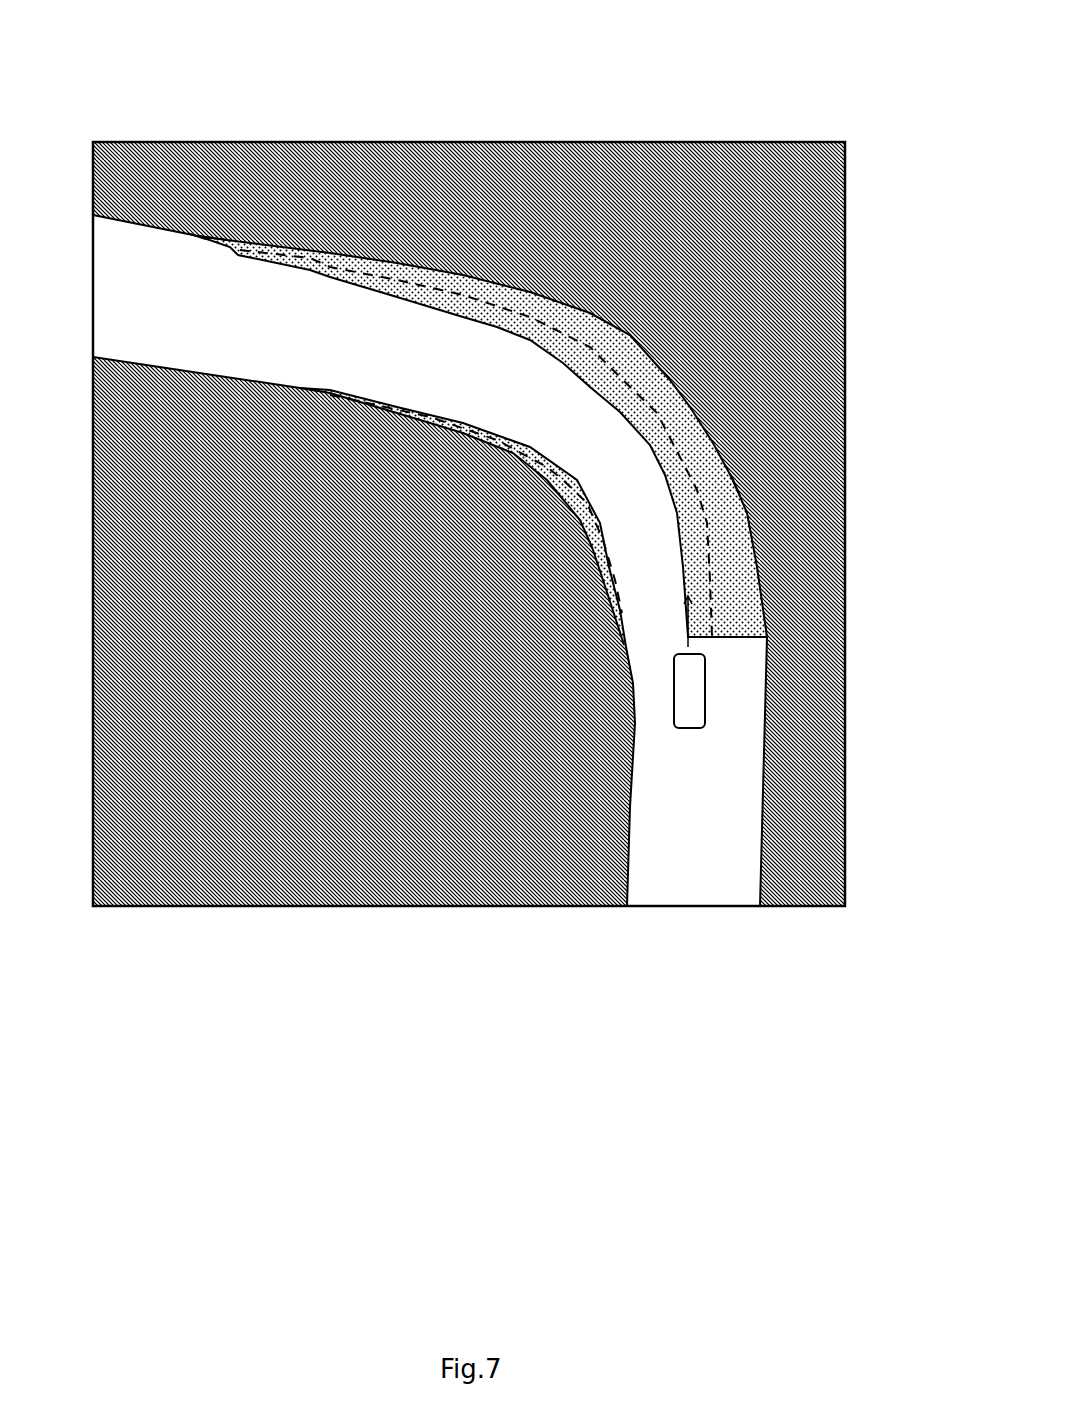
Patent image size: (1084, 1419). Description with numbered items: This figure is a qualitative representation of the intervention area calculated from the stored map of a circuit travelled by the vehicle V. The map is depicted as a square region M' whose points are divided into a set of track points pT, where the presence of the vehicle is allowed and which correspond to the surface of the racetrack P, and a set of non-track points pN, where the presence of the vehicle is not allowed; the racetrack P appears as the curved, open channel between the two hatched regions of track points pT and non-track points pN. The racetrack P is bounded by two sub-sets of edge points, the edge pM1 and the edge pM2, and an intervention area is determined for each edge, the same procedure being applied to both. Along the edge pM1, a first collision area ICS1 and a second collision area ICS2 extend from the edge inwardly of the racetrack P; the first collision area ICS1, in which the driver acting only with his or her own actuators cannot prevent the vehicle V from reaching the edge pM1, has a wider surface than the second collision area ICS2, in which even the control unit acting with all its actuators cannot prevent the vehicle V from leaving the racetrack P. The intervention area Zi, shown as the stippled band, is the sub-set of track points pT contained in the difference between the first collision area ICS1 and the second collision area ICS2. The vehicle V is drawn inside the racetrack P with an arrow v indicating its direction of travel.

The membrane matrix M' is at (469, 460).
The track points pT is at (748, 852).
The non-track points pN is at (235, 838).
The intervention area Zi is at (513, 328).
The edge sub-set of points pM1 is at (388, 240).
The edge sub-set of points pM2 is at (625, 848).
The first collision area ICS1 is at (198, 236).
The second collision area ICS2 is at (735, 488).
The vehicle V is at (705, 695).
The flow velocity arrow v is at (690, 652).
The racetrack P is at (700, 899).